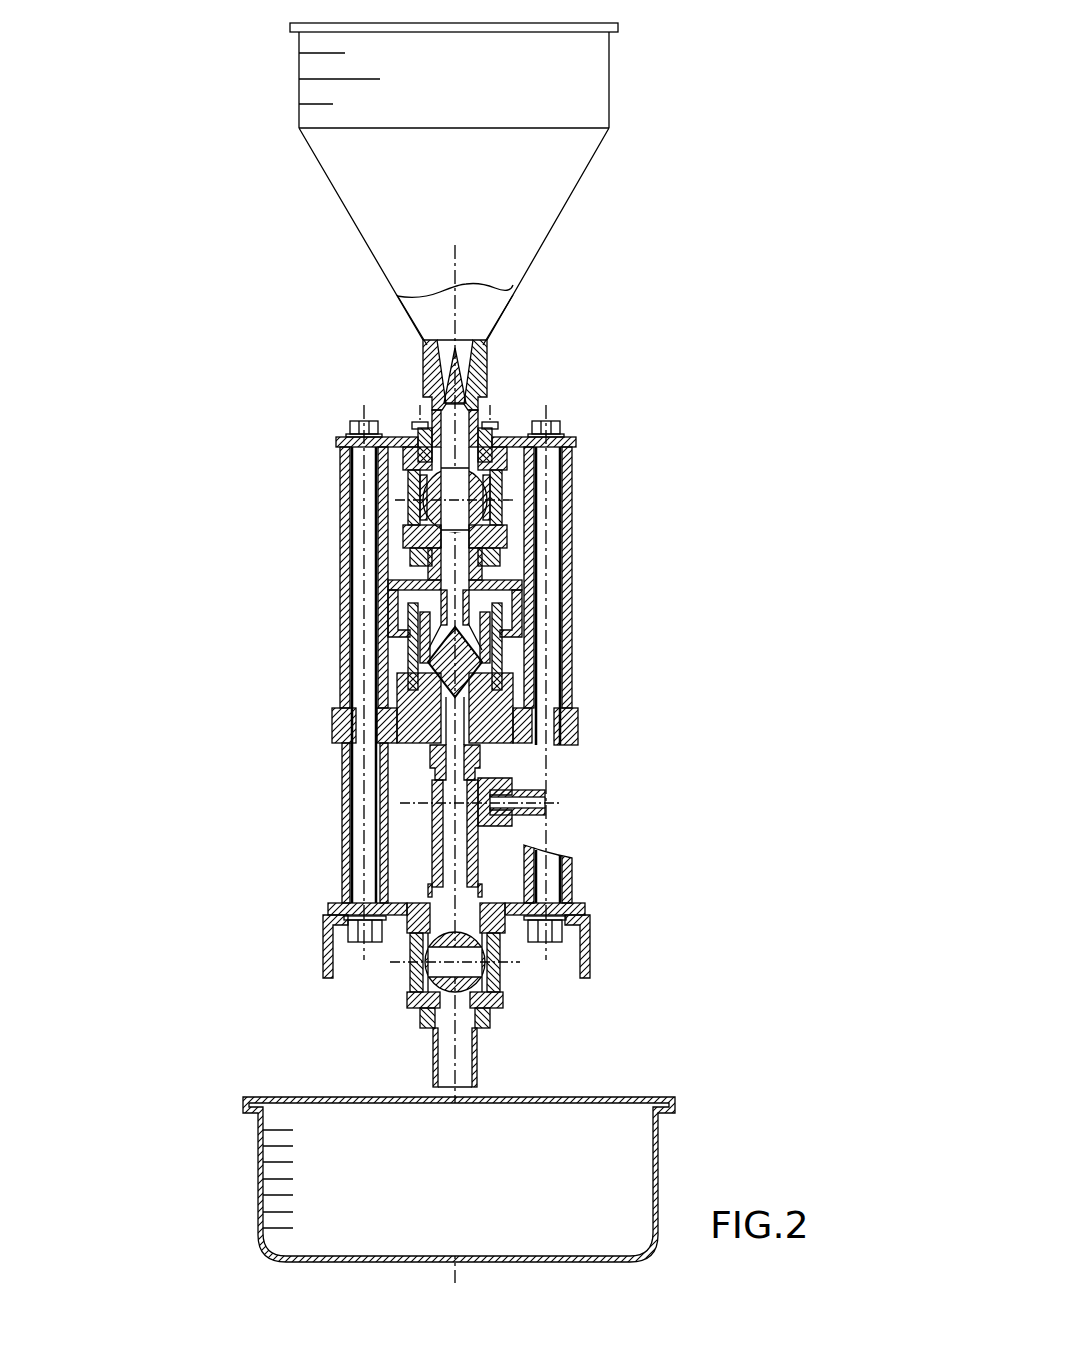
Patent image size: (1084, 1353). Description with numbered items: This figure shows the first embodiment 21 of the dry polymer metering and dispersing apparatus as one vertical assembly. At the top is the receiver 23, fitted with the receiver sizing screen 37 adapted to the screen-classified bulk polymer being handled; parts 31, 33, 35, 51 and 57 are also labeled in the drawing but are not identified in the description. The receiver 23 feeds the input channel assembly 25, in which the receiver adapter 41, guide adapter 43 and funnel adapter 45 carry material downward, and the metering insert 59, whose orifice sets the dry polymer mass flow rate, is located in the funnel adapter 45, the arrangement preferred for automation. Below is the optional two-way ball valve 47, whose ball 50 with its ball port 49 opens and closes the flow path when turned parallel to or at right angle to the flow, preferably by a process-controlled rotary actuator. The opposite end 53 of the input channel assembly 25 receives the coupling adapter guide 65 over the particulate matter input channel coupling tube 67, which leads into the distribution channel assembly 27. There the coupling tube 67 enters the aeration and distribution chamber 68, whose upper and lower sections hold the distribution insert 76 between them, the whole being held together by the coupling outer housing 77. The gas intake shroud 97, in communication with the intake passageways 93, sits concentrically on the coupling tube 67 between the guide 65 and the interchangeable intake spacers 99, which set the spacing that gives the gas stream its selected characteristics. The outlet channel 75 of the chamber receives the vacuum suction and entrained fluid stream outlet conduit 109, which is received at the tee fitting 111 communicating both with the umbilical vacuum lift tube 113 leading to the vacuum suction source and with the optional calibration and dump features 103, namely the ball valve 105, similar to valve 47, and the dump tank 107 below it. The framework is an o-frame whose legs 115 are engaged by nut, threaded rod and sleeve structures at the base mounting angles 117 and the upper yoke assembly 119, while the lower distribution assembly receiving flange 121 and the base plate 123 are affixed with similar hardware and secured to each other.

The apparatus embodiment 21 is at (668, 360).
The receiver 23 is at (305, 190).
The input channel assembly 25 is at (585, 437).
The distribution channel assembly 27 is at (578, 632).
The nozzle bore 31 is at (478, 356).
The hopper rim 33 is at (575, 30).
The hopper conical wall 35 is at (372, 228).
The receiver sizing screen 37 is at (558, 128).
The receiver adapter 41 is at (432, 392).
The guide adapter 43 is at (420, 410).
The funnel adapter 45 is at (486, 402).
The ball valve 47 is at (488, 485).
The ball port 49 is at (502, 522).
The ball 50 is at (440, 505).
The support tube 51 is at (345, 447).
The opposite end of input channel assembly 53 is at (504, 542).
The cone plug 57 is at (472, 350).
The metering insert 59 is at (428, 362).
The coupling adapter guide 65 is at (392, 582).
The input channel coupling tube 67 is at (500, 560).
The aeration and distribution chamber 68 is at (436, 656).
The outlet channel 75 is at (436, 755).
The distribution insert 76 is at (378, 714).
The coupling outer housing 77 is at (490, 675).
The intake passageways 93 is at (405, 606).
The gas intake shroud 97 is at (415, 632).
The intake spacers 99 is at (520, 590).
The calibration and dump features 103 is at (525, 1053).
The calibration and dump ball valve 105 is at (412, 970).
The dump tank 107 is at (305, 1112).
The outlet conduit 109 is at (442, 800).
The tee fitting 111 is at (504, 834).
The umbilical vacuum lift tube 113 is at (540, 802).
The legs 115 is at (342, 476).
The base mounting angles 117 is at (326, 940).
The upper yoke assembly 119 is at (506, 440).
The lower distribution assembly receiving flange 121 is at (575, 727).
The base plate 123 is at (588, 905).